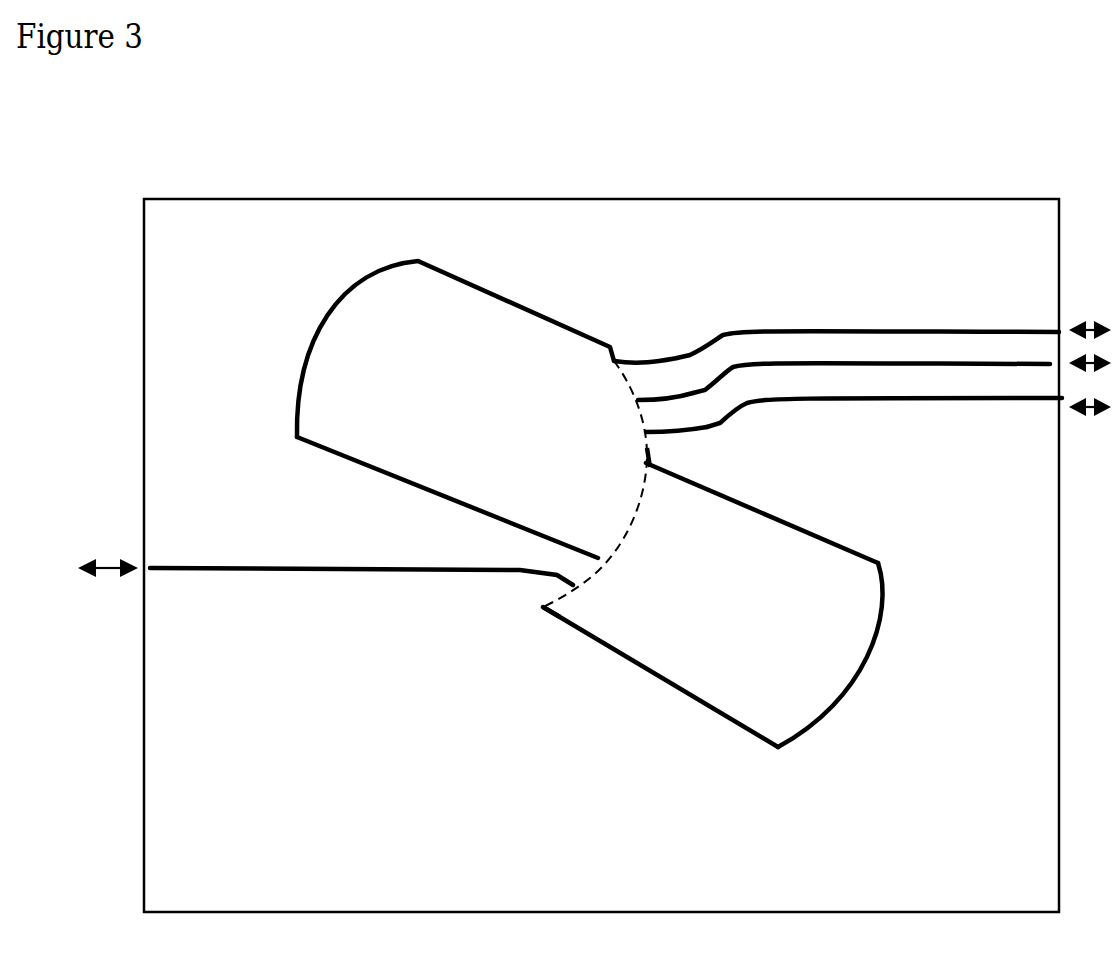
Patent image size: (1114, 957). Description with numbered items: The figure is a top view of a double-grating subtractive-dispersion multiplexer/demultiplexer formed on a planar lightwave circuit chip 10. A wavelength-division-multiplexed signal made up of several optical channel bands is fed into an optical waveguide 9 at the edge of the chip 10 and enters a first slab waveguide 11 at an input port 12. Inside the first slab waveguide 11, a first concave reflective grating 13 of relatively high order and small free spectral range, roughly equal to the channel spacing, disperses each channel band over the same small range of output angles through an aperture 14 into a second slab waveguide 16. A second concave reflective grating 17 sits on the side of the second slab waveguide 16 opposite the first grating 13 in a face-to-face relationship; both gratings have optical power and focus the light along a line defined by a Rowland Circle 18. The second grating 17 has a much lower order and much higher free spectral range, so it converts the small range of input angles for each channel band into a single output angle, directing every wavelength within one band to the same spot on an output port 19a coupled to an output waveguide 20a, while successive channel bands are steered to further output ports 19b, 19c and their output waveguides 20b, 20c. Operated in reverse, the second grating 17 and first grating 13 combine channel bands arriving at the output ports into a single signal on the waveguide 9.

The optical waveguide 9 is at (361, 597).
The planar lightwave circuit chip 10 is at (413, 813).
The first slab waveguide 11 is at (767, 636).
The input port 12 is at (582, 606).
The first concave reflective grating 13 is at (846, 704).
The aperture 14 is at (615, 484).
The second slab waveguide 16 is at (471, 398).
The second concave reflective grating 17 is at (324, 328).
The Rowland Circle 18 is at (649, 454).
The output port 19a is at (622, 365).
The output port 19b is at (640, 404).
The output port 19c is at (649, 440).
The output waveguide 20a is at (805, 327).
The output waveguide 20b is at (893, 357).
The output waveguide 20c is at (897, 400).